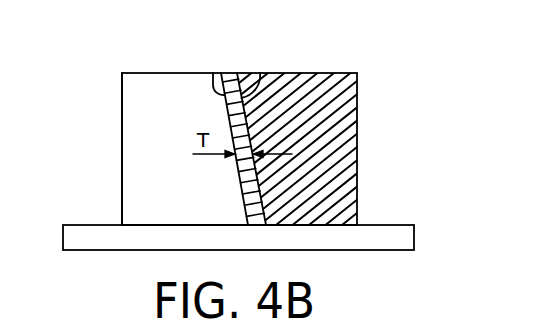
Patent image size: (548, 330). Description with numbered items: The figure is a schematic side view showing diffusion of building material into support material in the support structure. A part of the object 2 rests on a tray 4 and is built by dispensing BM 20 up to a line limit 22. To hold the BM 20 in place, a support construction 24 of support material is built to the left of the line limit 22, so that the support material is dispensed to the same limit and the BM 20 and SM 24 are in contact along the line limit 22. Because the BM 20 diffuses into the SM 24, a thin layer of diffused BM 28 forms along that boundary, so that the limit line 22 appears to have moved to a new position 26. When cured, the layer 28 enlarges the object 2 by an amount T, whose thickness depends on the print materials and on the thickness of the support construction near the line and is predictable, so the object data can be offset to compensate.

The object 2 is at (306, 73).
The tray 4 is at (406, 225).
The BM (building material) 20 is at (357, 115).
The line limit 22 is at (257, 73).
The support construction (SM) 24 is at (148, 120).
The new position of limit line 26 is at (212, 73).
The thin layer of diffused BM 28 is at (188, 143).